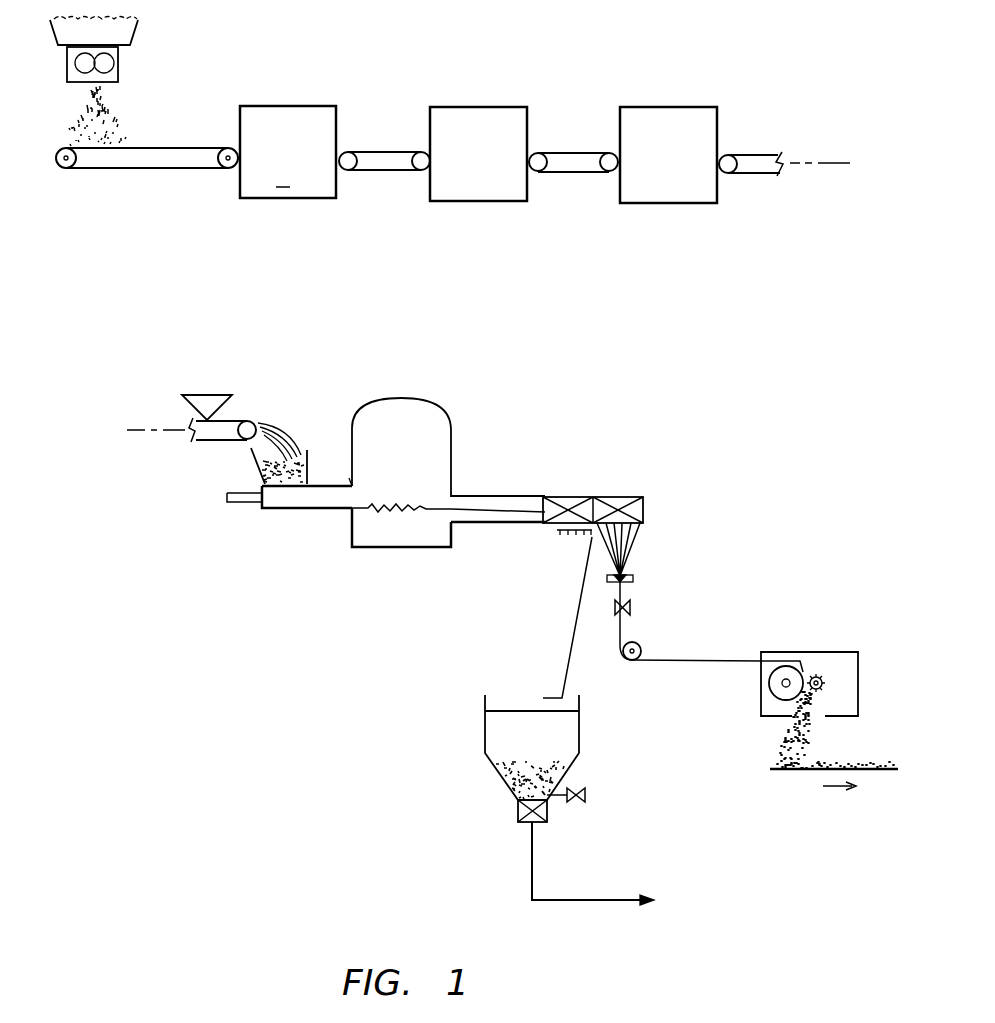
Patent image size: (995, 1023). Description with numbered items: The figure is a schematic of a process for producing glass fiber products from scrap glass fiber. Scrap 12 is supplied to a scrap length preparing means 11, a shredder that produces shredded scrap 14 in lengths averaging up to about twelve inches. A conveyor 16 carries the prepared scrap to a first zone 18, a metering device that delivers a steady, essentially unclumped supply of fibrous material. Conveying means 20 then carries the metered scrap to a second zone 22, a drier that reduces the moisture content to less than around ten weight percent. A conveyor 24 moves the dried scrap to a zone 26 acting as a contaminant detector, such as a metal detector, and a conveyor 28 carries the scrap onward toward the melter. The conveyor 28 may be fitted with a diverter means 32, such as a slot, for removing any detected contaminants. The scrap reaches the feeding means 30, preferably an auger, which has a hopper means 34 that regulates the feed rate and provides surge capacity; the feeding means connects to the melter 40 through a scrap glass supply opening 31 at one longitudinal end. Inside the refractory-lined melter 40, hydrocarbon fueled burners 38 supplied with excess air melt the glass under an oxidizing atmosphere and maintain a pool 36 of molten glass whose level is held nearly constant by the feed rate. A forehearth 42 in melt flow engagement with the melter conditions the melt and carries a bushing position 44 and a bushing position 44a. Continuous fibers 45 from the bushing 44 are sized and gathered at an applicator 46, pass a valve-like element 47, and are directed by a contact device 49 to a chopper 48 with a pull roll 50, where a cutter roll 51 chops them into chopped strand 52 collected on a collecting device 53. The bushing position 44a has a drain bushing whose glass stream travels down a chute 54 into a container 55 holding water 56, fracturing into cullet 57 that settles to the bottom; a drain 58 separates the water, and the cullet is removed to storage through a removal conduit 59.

The scrap length preparing means 11 is at (136, 26).
The scrap 12 is at (54, 37).
The shredded scrap 14 is at (78, 118).
The conveyor 16 is at (162, 171).
The first zone 18 is at (288, 152).
The conveying means 20 is at (378, 172).
The second zone 22 is at (470, 201).
The conveyor 24 is at (573, 173).
The zone 26 is at (654, 203).
The conveyor 28 is at (755, 176).
The feeding means 30 is at (278, 498).
The scrap glass supply opening 31 is at (350, 485).
The diverter means 32 is at (210, 393).
The hopper means 34 is at (307, 450).
The pool 36 is at (412, 532).
The hydrocarbon fueled burners 38 is at (453, 470).
The melter 40 is at (352, 547).
The forehearth 42 is at (517, 495).
The bushing position 44 is at (620, 497).
The bushing position 44a is at (550, 524).
The continuous fibers 45 is at (637, 540).
The applicator 46 is at (635, 578).
The valve 47 is at (632, 608).
The chopper 48 is at (770, 652).
The contact device 49 is at (642, 646).
The pull roll 50 is at (800, 668).
The cutter roll 51 is at (822, 680).
The chopped strand 52 is at (790, 737).
The collecting device 53 is at (873, 772).
The chute 54 is at (575, 617).
The container 55 is at (483, 718).
The water 56 is at (557, 757).
The cullet 57 is at (520, 775).
The drain 58 is at (586, 795).
The removal conduit 59 is at (527, 848).